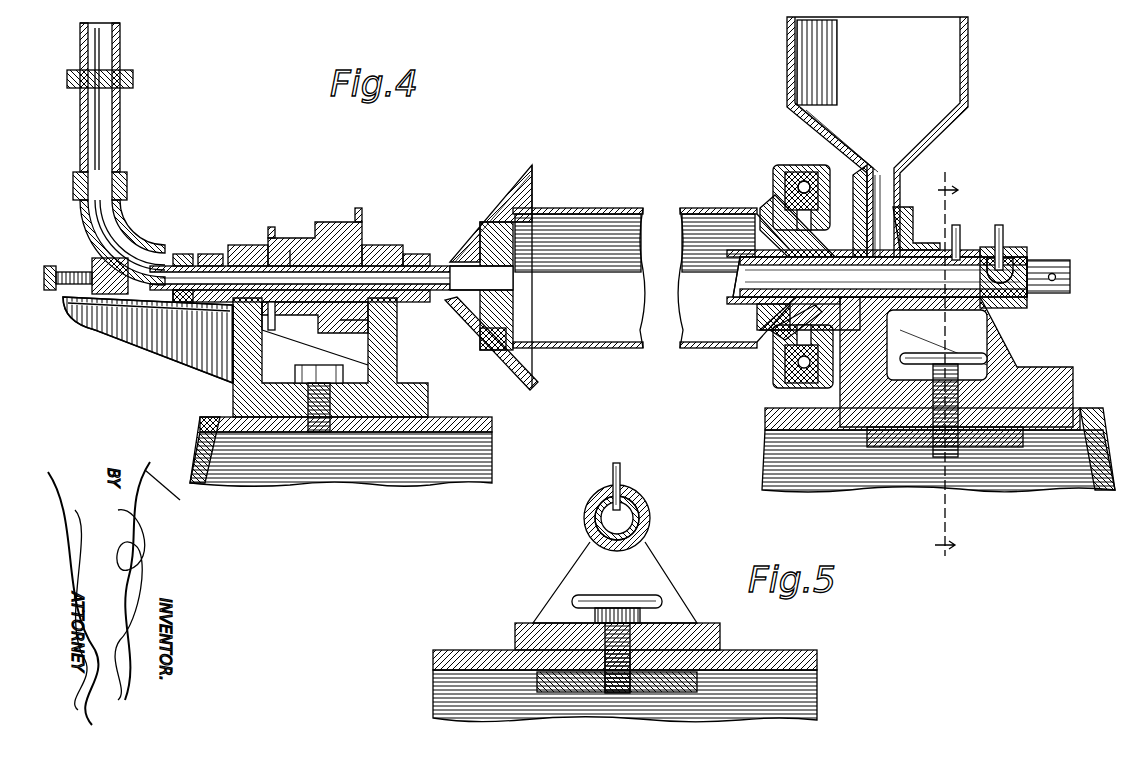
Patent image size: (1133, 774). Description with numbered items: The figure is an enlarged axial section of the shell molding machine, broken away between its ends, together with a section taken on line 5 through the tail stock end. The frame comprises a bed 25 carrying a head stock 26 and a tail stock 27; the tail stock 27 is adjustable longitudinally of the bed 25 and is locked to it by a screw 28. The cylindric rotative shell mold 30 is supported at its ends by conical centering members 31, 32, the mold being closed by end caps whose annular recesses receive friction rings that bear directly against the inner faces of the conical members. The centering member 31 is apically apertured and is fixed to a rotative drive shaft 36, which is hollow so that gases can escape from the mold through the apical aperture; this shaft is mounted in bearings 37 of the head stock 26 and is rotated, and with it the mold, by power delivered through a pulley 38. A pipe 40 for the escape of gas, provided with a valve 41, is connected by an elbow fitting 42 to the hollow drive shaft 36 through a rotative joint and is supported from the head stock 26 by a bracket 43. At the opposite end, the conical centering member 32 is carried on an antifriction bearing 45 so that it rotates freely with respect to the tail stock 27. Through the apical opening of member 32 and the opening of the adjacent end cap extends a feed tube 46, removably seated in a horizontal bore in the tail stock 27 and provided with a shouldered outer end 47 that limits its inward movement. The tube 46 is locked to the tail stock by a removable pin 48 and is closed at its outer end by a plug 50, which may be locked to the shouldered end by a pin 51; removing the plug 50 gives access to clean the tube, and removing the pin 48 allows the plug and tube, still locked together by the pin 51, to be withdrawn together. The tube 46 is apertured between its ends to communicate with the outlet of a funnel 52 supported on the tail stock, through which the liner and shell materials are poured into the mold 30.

In FIG. 4, the section line 5— 5 is at (944, 368).
In FIG. 5, the bed 25 is at (775, 650).
In FIG. 4, the head stock 26 is at (250, 385).
In FIG. 4, the tail stock 27 is at (1010, 345).
In FIG. 5, the tail stock 27 is at (650, 560).
In FIG. 4, the screw 28 is at (925, 354).
In FIG. 5, the screw 28 is at (600, 600).
In FIG. 4, the shell mold 30 is at (598, 210).
In FIG. 4, the conical centering member 31 is at (498, 200).
In FIG. 4, the conical centering member 32 is at (792, 200).
In FIG. 4, the drive shaft 36 is at (290, 250).
In FIG. 4, the bearings 37 is at (242, 255).
In FIG. 4, the pulley 38 is at (328, 235).
In FIG. 4, the pipe 40 is at (120, 128).
In FIG. 4, the valve 41 is at (80, 108).
In FIG. 4, the elbow fitting 42 is at (130, 246).
In FIG. 4, the bracket 43 is at (145, 335).
In FIG. 4, the antifriction bearing 45 is at (805, 182).
In FIG. 4, the feed tube 46 is at (742, 284).
In FIG. 5, the feed tube 46 is at (590, 506).
In FIG. 4, the shouldered outer end 47 is at (990, 256).
In FIG. 4, the pin 48 is at (957, 235).
In FIG. 5, the pin 48 is at (622, 470).
In FIG. 4, the plug 50 is at (1045, 268).
In FIG. 5, the plug 50 is at (648, 506).
In FIG. 4, the pin 51 is at (1003, 232).
In FIG. 4, the funnel 52 is at (968, 108).